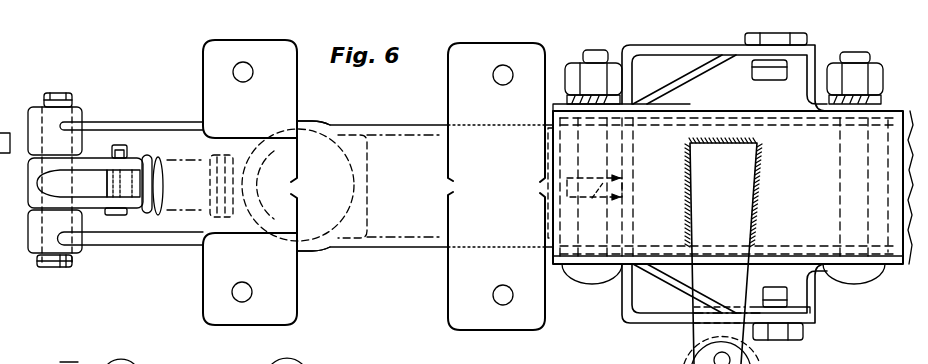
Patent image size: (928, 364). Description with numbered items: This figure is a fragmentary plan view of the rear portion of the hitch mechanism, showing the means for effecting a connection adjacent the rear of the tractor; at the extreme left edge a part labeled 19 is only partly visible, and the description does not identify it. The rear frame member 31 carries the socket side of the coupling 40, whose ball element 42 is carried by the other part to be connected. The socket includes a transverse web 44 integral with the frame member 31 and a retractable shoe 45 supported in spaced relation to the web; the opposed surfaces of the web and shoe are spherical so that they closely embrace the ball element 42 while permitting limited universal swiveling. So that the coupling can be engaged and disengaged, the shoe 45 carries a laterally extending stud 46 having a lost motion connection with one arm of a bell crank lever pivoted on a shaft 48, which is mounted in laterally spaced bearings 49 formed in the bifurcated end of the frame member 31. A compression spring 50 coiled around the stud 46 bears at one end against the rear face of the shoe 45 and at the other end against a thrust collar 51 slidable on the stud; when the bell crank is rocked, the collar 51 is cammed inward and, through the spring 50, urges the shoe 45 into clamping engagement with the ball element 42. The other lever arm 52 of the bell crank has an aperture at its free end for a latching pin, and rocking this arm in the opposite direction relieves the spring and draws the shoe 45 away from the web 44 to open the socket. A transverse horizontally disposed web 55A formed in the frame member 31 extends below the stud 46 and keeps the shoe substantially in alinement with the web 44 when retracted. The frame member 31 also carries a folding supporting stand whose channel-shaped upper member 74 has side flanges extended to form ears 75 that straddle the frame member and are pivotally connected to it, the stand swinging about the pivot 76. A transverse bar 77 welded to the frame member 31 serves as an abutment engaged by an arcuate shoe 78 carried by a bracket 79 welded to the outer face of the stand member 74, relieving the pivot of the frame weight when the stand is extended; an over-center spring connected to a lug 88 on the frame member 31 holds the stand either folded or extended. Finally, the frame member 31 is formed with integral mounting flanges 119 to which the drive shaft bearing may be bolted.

The frame member 19 is at (28, 128).
The rear frame member 31 is at (421, 126).
The coupling 40 is at (328, 256).
The ball element 42 is at (353, 168).
The transverse web 44 is at (368, 202).
The retractable shoe 45 is at (236, 146).
The stud 46 is at (133, 209).
The shaft 48 is at (58, 97).
The bearings 49 is at (28, 252).
The compression spring 50 is at (158, 216).
The thrust collar 51 is at (148, 156).
The lever arm 52 is at (88, 167).
The transverse horizontally disposed web 55A is at (133, 140).
The channel-shaped upper member 74 is at (633, 322).
The ears 75 is at (810, 321).
The pivot 76 is at (775, 340).
The transverse bar 77 is at (552, 155).
The arcuate shoe 78 is at (547, 203).
The bracket 79 is at (603, 192).
The lug 88 is at (742, 213).
The mounting flanges 119 is at (290, 307).